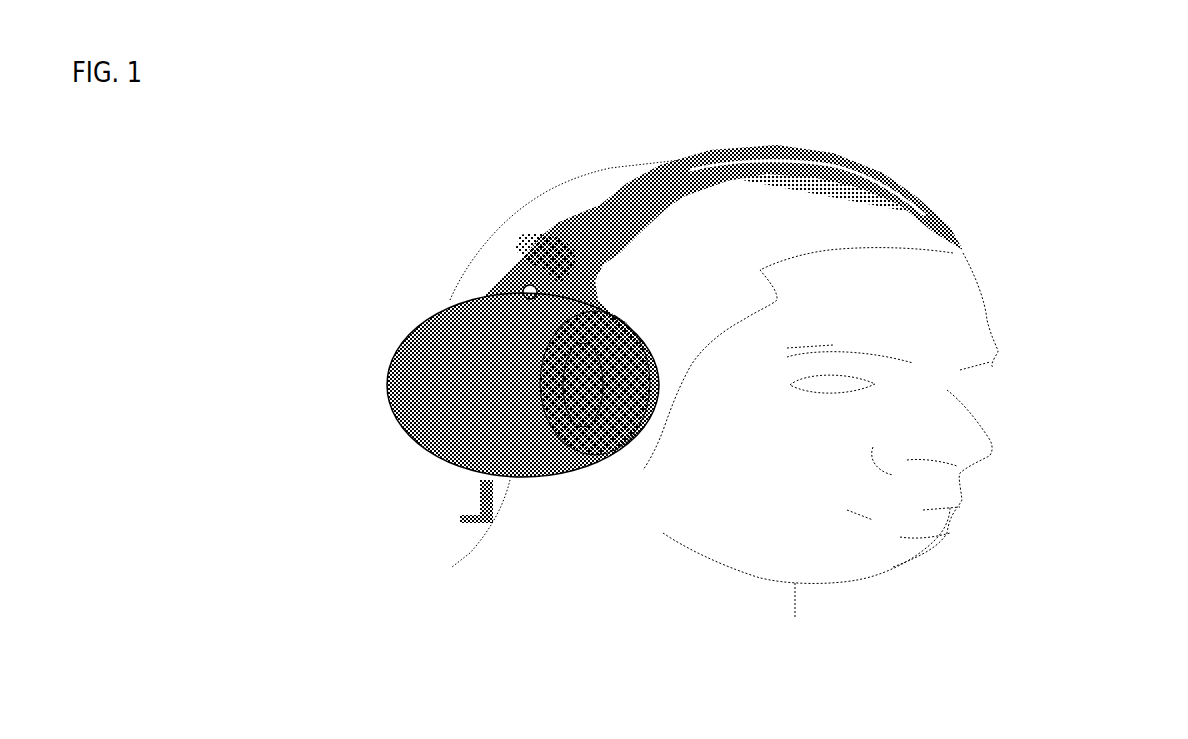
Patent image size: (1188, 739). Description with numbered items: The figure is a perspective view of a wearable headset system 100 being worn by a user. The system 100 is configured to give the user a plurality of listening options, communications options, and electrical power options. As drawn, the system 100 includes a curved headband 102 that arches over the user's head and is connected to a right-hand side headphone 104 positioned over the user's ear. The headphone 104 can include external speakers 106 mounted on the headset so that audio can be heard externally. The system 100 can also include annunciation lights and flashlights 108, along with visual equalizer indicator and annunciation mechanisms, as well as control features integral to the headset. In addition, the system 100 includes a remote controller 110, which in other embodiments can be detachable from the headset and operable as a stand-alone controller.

The system 100 is at (941, 132).
The curved headband 102 is at (658, 170).
The right-hand side headphone 104 is at (445, 322).
The external speakers 106 is at (420, 400).
The annunciation lights and flashlights 108 is at (603, 433).
The remote controller 110 is at (552, 238).